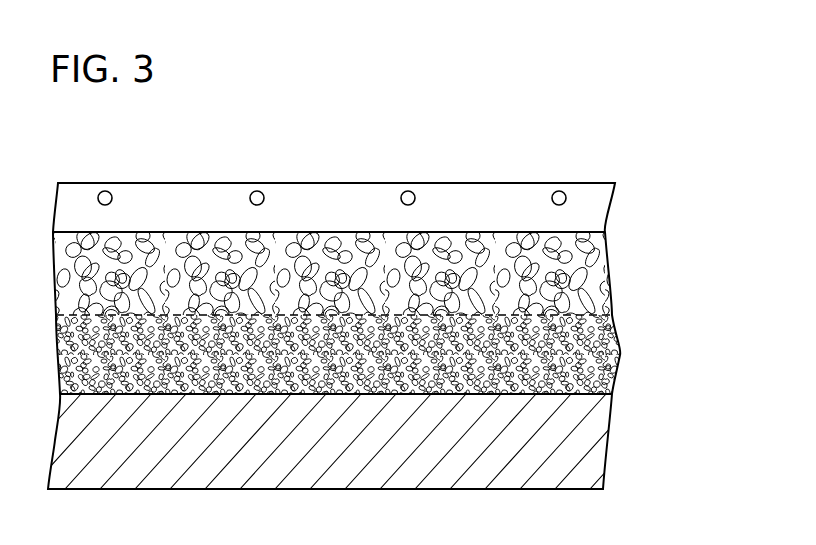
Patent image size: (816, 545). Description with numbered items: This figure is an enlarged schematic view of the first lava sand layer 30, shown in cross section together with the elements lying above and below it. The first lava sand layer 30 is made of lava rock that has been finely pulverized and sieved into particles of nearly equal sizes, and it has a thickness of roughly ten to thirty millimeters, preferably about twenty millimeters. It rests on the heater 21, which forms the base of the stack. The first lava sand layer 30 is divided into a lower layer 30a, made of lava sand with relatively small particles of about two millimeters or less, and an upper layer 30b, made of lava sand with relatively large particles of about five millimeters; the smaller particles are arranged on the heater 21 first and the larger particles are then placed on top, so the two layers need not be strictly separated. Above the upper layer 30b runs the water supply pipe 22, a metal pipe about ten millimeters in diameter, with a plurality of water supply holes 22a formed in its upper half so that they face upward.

The heater 21 is at (583, 440).
The water supply pipe 22 is at (332, 183).
The water supply holes 22a is at (109, 192).
The first lava sand layer 30 is at (720, 267).
The lower layer 30a is at (590, 358).
The upper layer 30b is at (590, 275).